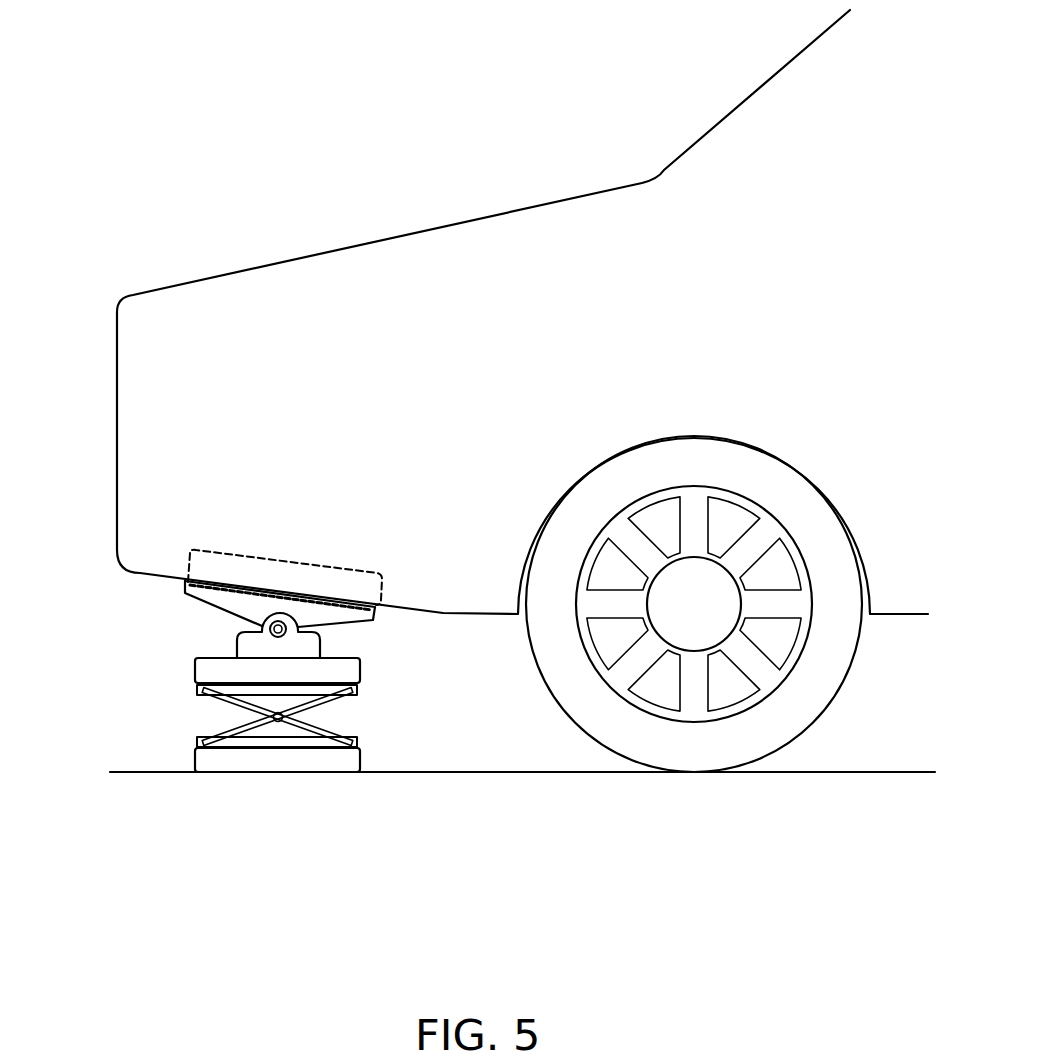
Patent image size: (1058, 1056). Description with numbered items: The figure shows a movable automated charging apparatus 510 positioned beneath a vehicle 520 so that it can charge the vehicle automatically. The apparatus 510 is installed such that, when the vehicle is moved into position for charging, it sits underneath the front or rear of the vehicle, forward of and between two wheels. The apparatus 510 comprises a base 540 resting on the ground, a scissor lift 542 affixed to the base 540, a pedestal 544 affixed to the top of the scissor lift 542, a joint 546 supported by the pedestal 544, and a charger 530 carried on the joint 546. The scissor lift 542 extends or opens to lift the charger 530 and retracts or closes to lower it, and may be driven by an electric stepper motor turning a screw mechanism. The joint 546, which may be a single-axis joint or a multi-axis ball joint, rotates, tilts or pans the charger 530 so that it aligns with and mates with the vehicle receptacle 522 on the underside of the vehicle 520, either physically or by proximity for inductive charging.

The movable automated charging apparatus 510 is at (150, 727).
The vehicle 520 is at (300, 240).
The vehicle receptacle 522 is at (292, 562).
The charger 530 is at (186, 584).
The base 540 is at (362, 766).
The scissor lift 542 is at (338, 700).
The pedestal 544 is at (361, 666).
The joint 546 is at (272, 630).